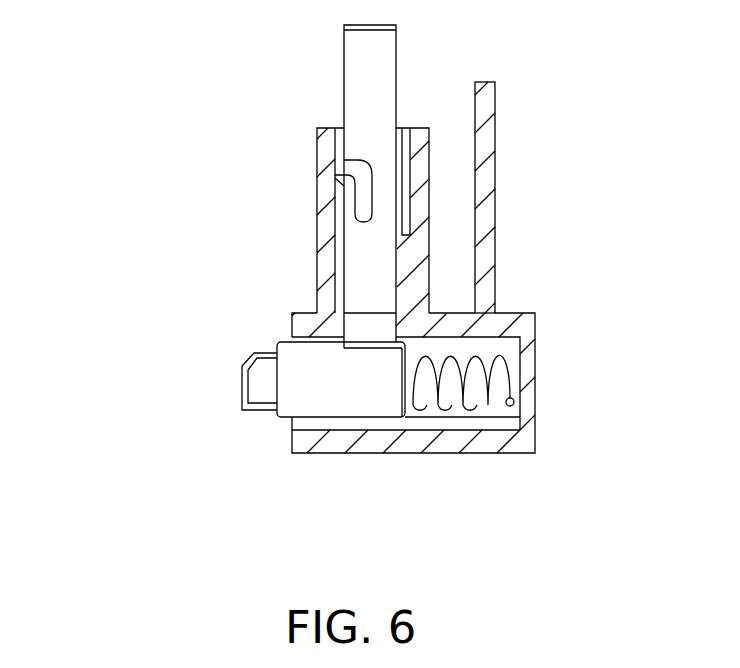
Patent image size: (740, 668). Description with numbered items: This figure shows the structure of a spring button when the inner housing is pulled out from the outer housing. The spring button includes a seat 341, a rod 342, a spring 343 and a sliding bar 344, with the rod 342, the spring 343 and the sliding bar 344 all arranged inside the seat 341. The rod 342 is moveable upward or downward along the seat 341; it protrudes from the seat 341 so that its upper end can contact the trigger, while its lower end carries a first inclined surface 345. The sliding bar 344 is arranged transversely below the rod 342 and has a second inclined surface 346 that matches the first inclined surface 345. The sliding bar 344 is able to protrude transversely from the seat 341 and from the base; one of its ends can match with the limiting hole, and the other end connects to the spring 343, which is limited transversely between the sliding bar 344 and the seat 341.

The seat 341 is at (335, 263).
The rod 342 is at (367, 96).
The spring 343 is at (488, 383).
The sliding bar 344 is at (348, 397).
The first inclined surface 345 is at (380, 330).
The second inclined surface 346 is at (328, 390).